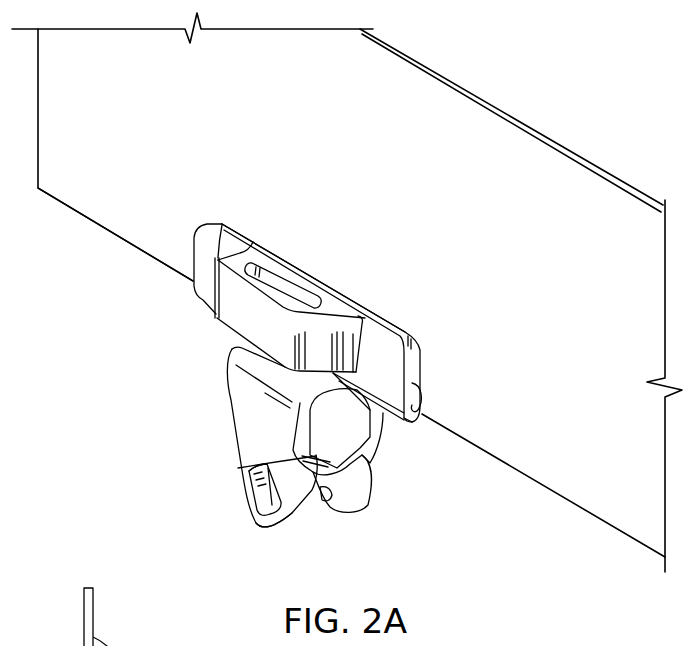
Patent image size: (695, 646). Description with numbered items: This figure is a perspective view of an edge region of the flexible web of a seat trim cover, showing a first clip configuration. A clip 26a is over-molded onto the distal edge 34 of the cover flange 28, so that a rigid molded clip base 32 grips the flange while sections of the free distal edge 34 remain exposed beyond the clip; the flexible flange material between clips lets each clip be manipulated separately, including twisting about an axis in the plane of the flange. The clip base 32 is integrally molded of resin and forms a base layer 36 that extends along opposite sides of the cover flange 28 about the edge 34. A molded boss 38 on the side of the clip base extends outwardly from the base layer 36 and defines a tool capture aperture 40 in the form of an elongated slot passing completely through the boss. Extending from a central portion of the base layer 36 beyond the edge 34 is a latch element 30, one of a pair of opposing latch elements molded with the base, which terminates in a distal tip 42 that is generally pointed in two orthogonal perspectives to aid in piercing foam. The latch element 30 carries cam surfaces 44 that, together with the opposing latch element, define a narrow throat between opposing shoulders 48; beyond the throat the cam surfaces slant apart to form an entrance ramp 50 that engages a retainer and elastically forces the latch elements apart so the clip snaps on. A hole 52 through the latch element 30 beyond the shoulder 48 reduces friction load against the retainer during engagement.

The clip 26a is at (100, 350).
The cover flange 28 is at (57, 200).
The latch element 30 is at (368, 461).
The clip base 32 is at (194, 292).
The distal edge 34 is at (605, 524).
The base layer 36 is at (413, 420).
The molded boss 38 is at (222, 338).
The tool capture aperture 40 is at (250, 279).
The distal tip 42 is at (250, 529).
The cam surface 44 is at (369, 483).
The shoulder 48 is at (318, 456).
The entrance ramp 50 is at (282, 524).
The hole 52 is at (250, 496).